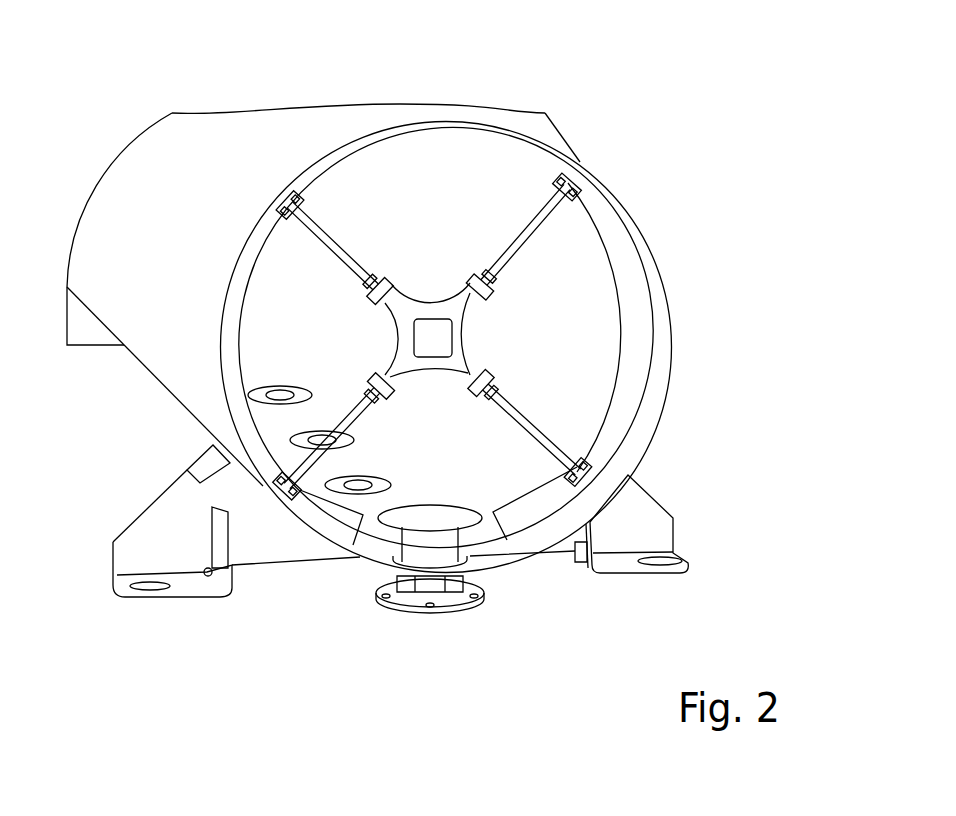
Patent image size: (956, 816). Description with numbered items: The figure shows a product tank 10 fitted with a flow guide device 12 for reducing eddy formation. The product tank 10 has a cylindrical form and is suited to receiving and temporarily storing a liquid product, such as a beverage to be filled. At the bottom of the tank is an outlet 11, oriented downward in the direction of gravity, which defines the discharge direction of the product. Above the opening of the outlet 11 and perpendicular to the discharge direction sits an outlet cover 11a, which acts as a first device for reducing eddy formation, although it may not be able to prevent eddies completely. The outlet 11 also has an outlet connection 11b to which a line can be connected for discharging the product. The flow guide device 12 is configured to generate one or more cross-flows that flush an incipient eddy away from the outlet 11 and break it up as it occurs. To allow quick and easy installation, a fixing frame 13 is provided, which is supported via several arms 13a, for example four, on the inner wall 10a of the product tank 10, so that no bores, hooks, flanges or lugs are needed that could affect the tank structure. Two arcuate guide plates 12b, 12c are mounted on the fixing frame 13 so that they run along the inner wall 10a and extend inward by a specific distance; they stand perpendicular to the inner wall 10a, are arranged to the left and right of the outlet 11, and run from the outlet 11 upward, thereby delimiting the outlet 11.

The product tank 10 is at (425, 329).
The inner wall 10a is at (487, 170).
The outlet 11 is at (451, 603).
The outlet cover 11a is at (418, 518).
The outlet connection 11b is at (432, 597).
The flow guide device 12 is at (437, 337).
The arcuate guide plate 12b is at (626, 372).
The arcuate guide plate 12c is at (246, 427).
The fixing frame 13 is at (498, 283).
The arms 13a is at (527, 405).